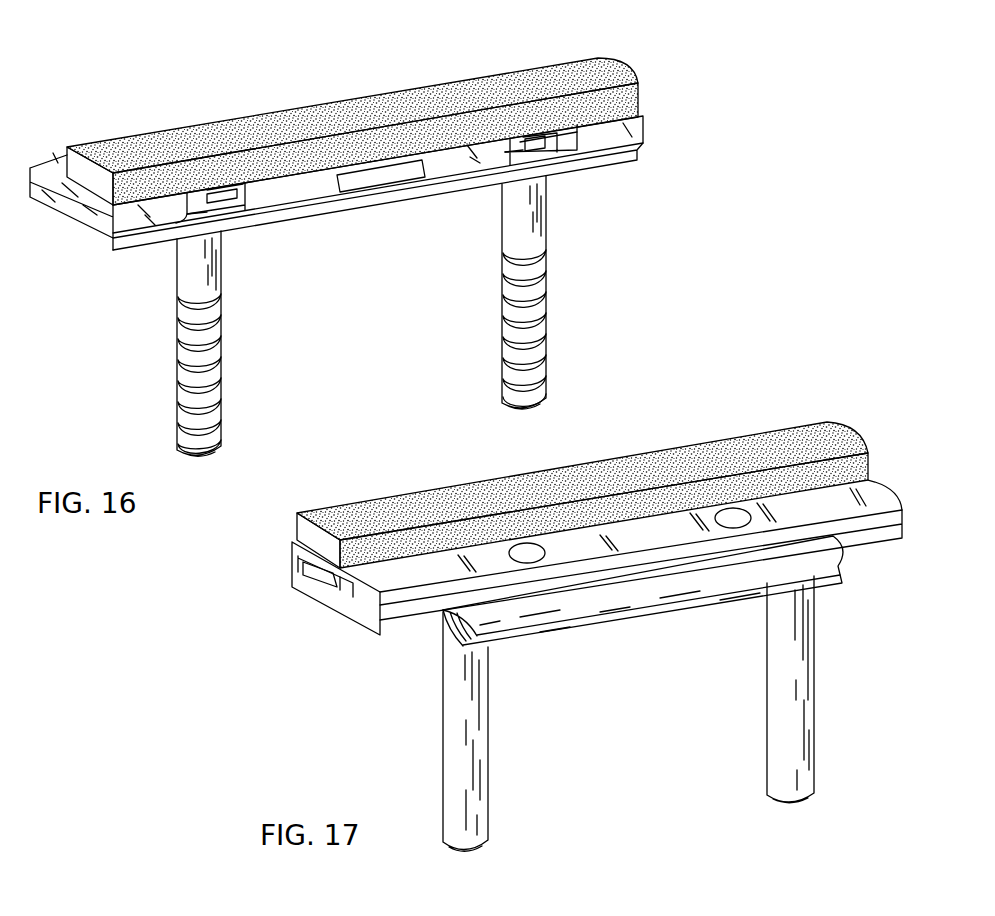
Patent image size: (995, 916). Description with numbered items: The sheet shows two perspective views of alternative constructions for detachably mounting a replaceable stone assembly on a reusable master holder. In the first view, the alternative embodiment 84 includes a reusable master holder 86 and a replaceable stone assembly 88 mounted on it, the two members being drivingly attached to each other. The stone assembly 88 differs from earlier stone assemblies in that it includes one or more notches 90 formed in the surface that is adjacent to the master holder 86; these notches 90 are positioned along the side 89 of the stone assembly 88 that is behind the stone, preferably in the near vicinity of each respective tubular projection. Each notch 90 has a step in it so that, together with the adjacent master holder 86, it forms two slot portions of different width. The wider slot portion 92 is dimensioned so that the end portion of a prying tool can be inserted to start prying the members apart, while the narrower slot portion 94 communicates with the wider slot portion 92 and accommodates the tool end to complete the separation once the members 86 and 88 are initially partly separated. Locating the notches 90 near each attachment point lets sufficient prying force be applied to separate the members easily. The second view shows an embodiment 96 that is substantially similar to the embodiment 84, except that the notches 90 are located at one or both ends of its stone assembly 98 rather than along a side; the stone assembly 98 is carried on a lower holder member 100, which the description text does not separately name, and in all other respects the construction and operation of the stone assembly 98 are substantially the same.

In FIG. 16, the alternative embodiment 84 is at (386, 238).
In FIG. 16, the master holder 86 is at (131, 255).
In FIG. 16, the stone assembly 88 is at (650, 88).
In FIG. 16, the side 89 is at (473, 158).
In FIG. 16, the notch 90 is at (225, 212).
In FIG. 17, the notch 90 is at (312, 577).
In FIG. 16, the wider slot portion 92 is at (218, 197).
In FIG. 17, the wider slot portion 92 is at (322, 555).
In FIG. 16, the slot portion 94 is at (250, 197).
In FIG. 17, the slot portion 94 is at (342, 585).
In FIG. 17, the embodiment 96 is at (548, 596).
In FIG. 17, the stone assembly 98 is at (548, 540).
In FIG. 17, the bracket 100 is at (398, 640).